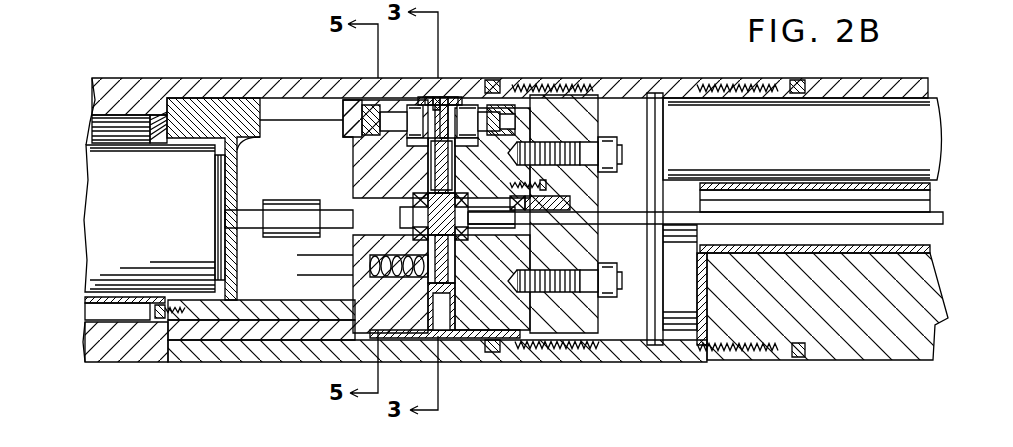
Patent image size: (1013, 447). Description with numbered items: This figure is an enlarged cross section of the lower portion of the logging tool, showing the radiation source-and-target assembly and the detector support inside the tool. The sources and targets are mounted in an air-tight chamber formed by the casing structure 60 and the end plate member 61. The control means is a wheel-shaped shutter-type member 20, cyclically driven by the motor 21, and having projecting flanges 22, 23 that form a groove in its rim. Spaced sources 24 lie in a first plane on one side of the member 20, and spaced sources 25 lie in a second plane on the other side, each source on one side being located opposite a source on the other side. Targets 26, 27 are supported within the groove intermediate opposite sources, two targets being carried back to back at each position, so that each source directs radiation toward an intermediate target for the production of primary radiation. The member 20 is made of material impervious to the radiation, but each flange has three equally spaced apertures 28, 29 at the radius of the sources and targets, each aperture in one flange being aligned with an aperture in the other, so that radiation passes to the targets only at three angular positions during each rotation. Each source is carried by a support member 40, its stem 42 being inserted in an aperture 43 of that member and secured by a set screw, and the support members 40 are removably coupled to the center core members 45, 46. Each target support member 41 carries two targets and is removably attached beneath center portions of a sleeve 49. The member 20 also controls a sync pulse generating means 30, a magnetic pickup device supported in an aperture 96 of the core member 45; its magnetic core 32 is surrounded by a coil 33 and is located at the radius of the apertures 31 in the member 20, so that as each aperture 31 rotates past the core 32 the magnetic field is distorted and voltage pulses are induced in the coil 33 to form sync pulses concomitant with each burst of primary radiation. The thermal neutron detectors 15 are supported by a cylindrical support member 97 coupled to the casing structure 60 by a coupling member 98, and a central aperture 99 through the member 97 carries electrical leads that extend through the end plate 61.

The casing structure 60 is at (240, 78).
The motor 21 is at (105, 140).
The magnetic core 32 is at (370, 262).
The aperture 96 is at (360, 275).
The center core member 45 is at (353, 182).
The aperture 43 is at (345, 85).
The sync pulse generating means 30 is at (408, 323).
The sources 24 is at (468, 140).
The wheel-shaped shutter-type member 20 is at (452, 242).
The support member 40 is at (370, 103).
The stem 42 is at (498, 105).
The sources 25 is at (415, 145).
The support member 41 is at (452, 142).
The projecting flange 22 is at (433, 332).
The projecting flange 23 is at (448, 332).
The apertures 31 is at (432, 168).
The coil 33 is at (405, 262).
The apertures 29 is at (420, 97).
The targets 27 is at (434, 97).
The targets 26 is at (446, 97).
The apertures 28 is at (458, 97).
The end plate member 61 is at (582, 98).
The center core member 46 is at (523, 320).
The sleeve 49 is at (500, 345).
The thermal neutron detectors 15 is at (937, 137).
The central aperture 99 is at (925, 200).
The support member 97 is at (933, 340).
The coupling member 98 is at (730, 352).